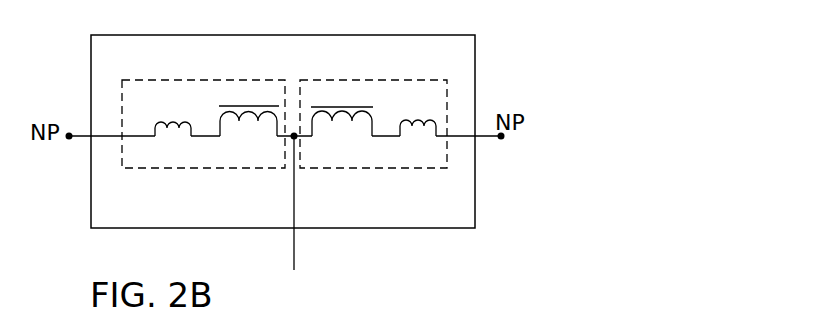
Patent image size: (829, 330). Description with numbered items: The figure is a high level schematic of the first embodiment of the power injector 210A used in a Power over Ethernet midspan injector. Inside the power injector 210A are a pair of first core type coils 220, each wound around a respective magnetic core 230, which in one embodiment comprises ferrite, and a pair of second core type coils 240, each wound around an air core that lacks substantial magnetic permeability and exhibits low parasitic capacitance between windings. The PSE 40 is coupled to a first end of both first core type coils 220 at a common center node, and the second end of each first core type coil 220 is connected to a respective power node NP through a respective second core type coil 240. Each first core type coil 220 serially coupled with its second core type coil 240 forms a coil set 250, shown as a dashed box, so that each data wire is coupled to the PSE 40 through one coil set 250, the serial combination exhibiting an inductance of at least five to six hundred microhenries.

The power injector 210A is at (358, 228).
The PSE 40 is at (297, 217).
The coil set 250 is at (242, 168).
The first core type coil 220 is at (255, 123).
The magnetic core 230 is at (252, 107).
The second core type coil 240 is at (182, 124).